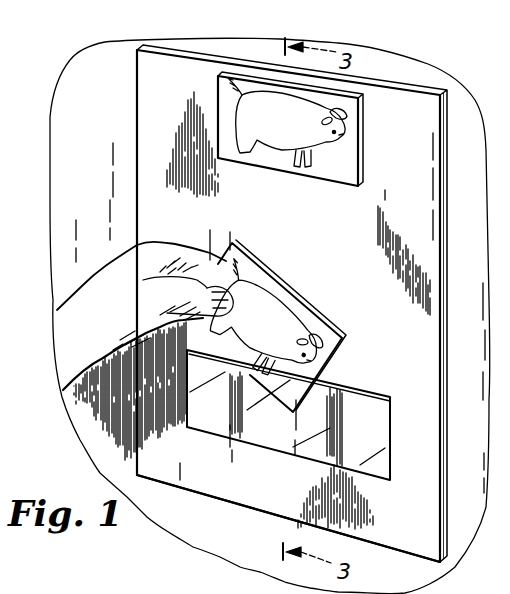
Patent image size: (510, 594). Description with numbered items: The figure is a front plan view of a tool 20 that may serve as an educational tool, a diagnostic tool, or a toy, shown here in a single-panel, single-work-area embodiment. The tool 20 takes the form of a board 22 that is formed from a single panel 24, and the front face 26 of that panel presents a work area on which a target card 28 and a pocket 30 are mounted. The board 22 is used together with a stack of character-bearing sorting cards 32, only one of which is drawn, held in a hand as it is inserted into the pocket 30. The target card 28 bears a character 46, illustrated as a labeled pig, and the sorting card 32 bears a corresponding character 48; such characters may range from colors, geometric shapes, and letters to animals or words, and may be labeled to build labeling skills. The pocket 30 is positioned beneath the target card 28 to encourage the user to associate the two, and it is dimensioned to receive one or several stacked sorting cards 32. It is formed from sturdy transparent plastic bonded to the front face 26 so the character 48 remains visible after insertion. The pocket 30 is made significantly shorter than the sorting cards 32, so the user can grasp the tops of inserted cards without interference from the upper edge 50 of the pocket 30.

The tool 20 is at (131, 112).
The board 22 is at (133, 185).
The panel 24 is at (444, 283).
The front face 26 is at (427, 505).
The target card 28 is at (364, 163).
The pocket 30 is at (391, 400).
The sorting card 32 is at (288, 294).
The character 46 is at (347, 114).
The character 48 is at (290, 327).
The upper edge 50 is at (374, 396).